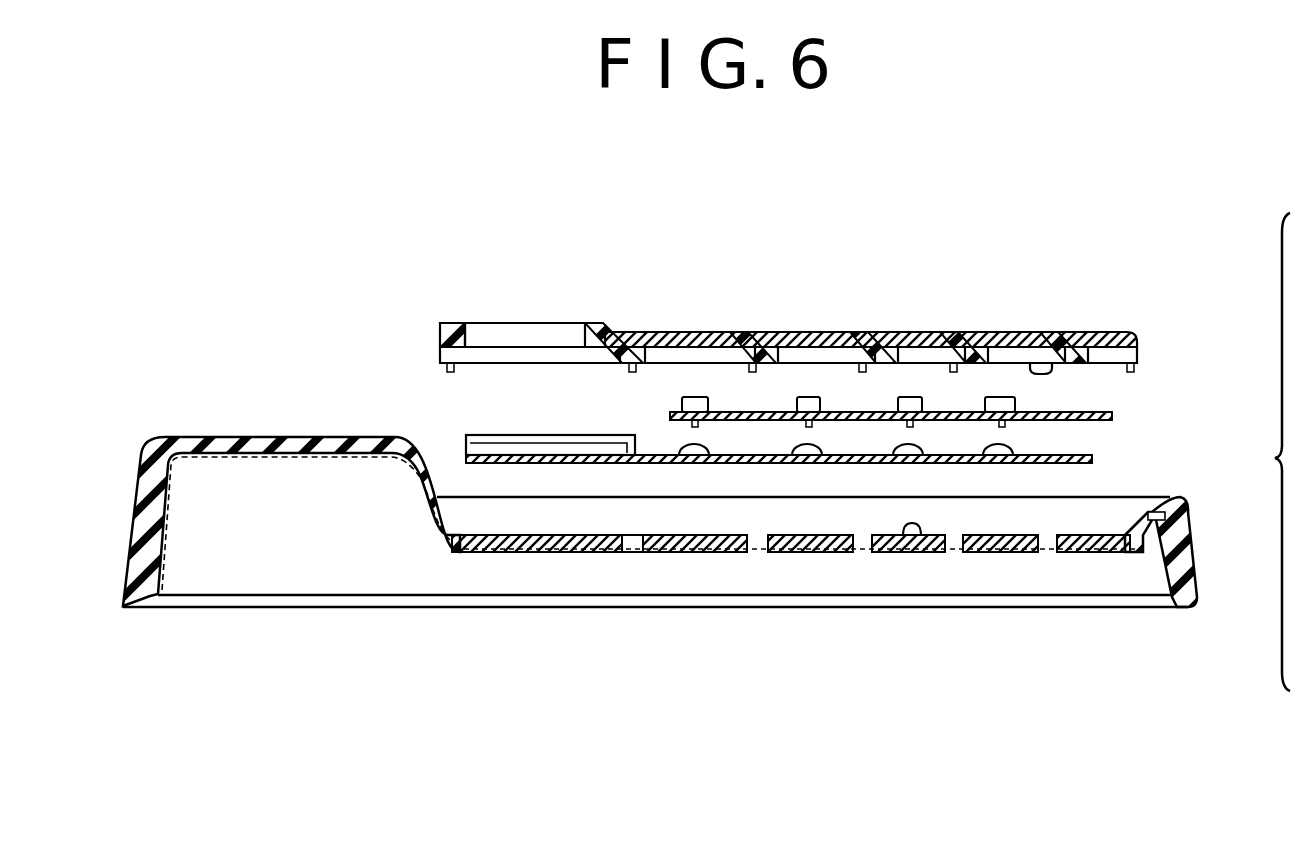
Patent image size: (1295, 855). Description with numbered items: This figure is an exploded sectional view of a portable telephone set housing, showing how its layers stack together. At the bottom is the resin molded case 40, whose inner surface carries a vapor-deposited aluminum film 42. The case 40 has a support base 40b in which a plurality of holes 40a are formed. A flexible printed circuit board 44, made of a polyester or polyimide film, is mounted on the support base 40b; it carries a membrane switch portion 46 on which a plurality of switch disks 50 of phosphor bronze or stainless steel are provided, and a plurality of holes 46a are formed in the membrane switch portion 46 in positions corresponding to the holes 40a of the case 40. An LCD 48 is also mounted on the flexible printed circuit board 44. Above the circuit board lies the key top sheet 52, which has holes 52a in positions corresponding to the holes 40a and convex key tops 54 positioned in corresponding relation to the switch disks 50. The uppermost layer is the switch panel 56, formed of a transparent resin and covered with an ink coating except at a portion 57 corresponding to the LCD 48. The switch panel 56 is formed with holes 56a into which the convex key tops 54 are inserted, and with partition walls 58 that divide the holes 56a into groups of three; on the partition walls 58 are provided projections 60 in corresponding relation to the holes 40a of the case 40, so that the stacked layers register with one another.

The resin molded case 40 is at (1182, 540).
The holes 40a is at (628, 548).
The support base 40b is at (912, 537).
The vapor-deposited aluminum film 42 is at (812, 552).
The flexible printed circuit board 44 is at (1072, 466).
The membrane switch portion 46 is at (1000, 465).
The holes 46a is at (755, 465).
The LCD 48 is at (537, 447).
The switch disks 50 is at (1005, 447).
The key top sheet 52 is at (1112, 416).
The holes 52a is at (753, 412).
The convex key tops 54 is at (907, 397).
The switch panel 56 is at (741, 332).
The holes 56a is at (690, 332).
The portion corresponding to the LCD 57 is at (513, 323).
The partition walls 58 is at (1062, 332).
The projections 60 is at (1035, 355).